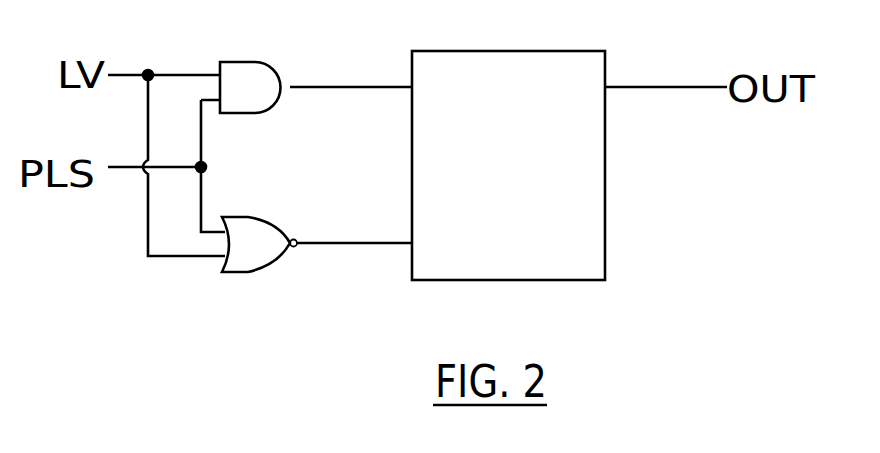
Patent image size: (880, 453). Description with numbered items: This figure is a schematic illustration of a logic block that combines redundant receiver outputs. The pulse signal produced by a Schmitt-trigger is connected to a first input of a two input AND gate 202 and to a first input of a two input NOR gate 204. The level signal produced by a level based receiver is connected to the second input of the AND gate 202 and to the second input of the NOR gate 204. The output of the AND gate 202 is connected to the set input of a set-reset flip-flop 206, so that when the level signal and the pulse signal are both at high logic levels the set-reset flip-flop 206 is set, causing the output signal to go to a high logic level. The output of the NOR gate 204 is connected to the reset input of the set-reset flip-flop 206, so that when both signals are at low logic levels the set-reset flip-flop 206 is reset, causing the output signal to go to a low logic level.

The two input AND gate 202 is at (240, 67).
The two input NOR gate 204 is at (233, 258).
The set-reset flip-flop 206 is at (595, 280).